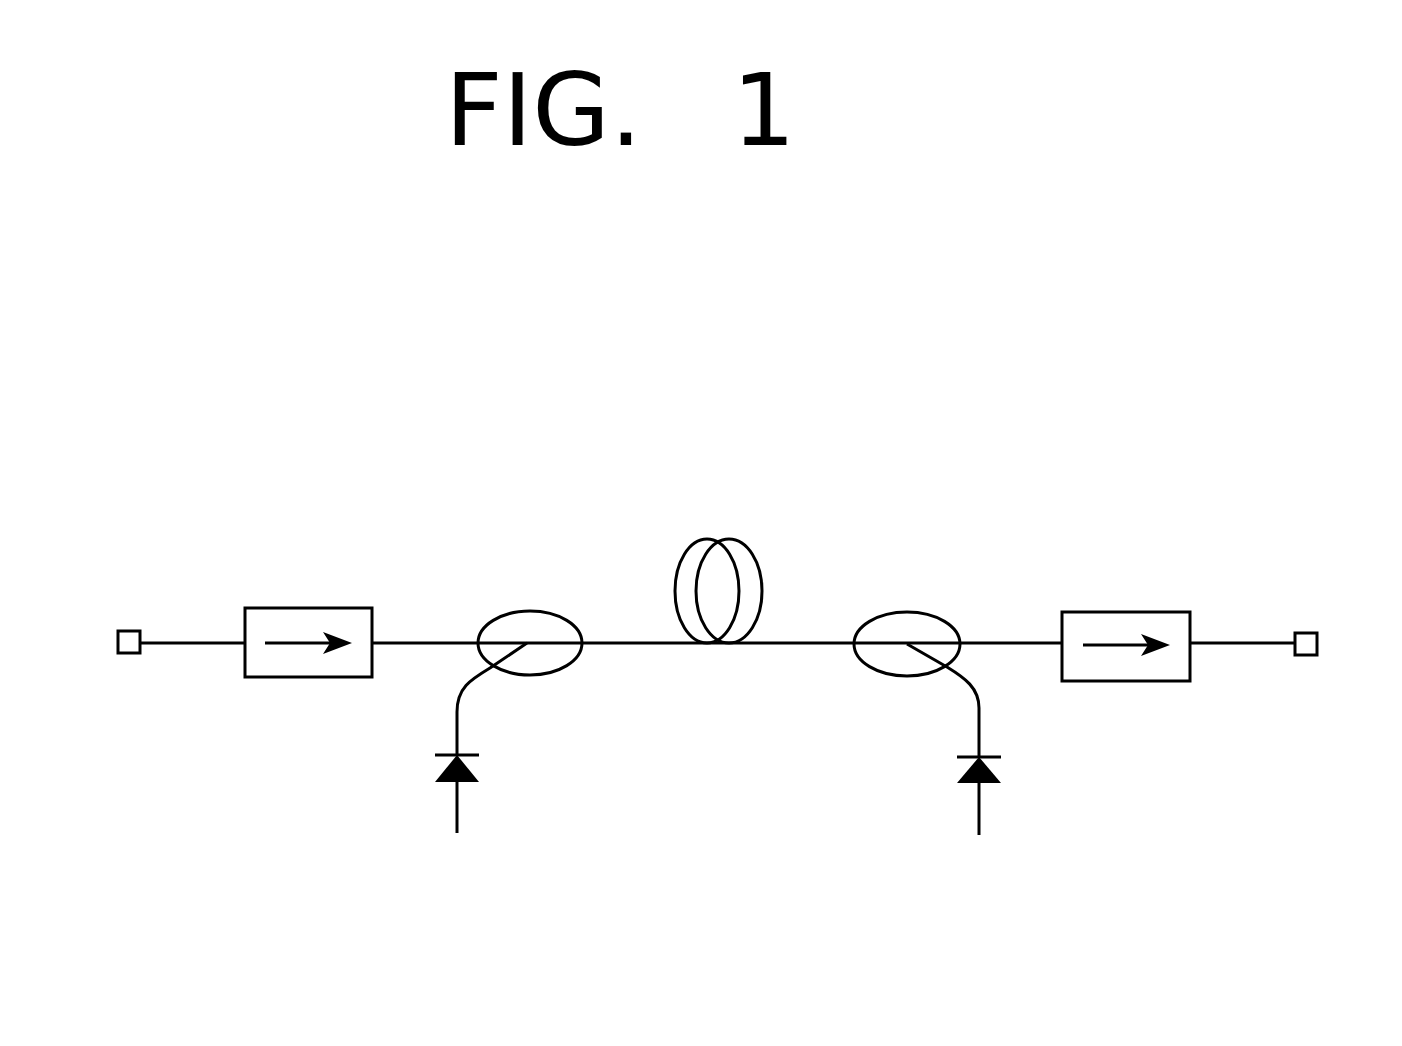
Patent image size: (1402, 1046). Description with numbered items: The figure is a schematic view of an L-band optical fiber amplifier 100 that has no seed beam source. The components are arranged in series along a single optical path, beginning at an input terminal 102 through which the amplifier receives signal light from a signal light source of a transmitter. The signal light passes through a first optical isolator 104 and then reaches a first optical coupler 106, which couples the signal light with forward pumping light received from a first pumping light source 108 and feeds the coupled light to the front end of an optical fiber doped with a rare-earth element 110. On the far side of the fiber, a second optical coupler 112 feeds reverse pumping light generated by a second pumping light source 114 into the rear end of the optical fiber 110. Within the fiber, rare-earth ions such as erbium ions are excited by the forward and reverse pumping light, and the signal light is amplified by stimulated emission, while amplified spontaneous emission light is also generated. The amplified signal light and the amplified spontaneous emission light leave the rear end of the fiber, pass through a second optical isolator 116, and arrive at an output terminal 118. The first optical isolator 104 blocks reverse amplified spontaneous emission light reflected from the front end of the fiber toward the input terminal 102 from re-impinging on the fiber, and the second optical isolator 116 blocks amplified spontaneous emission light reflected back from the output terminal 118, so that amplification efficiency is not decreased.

The L-band optical fiber amplifier 100 is at (743, 865).
The input terminal 102 is at (130, 655).
The first optical isolator 104 is at (300, 620).
The first optical coupler 106 is at (523, 623).
The first pumping light source 108 is at (420, 791).
The optical fiber doped with a rare-earth element 110 is at (725, 538).
The second optical coupler 112 is at (910, 622).
The second pumping light source 114 is at (1013, 790).
The second optical isolator 116 is at (1122, 620).
The output terminal 118 is at (1308, 660).